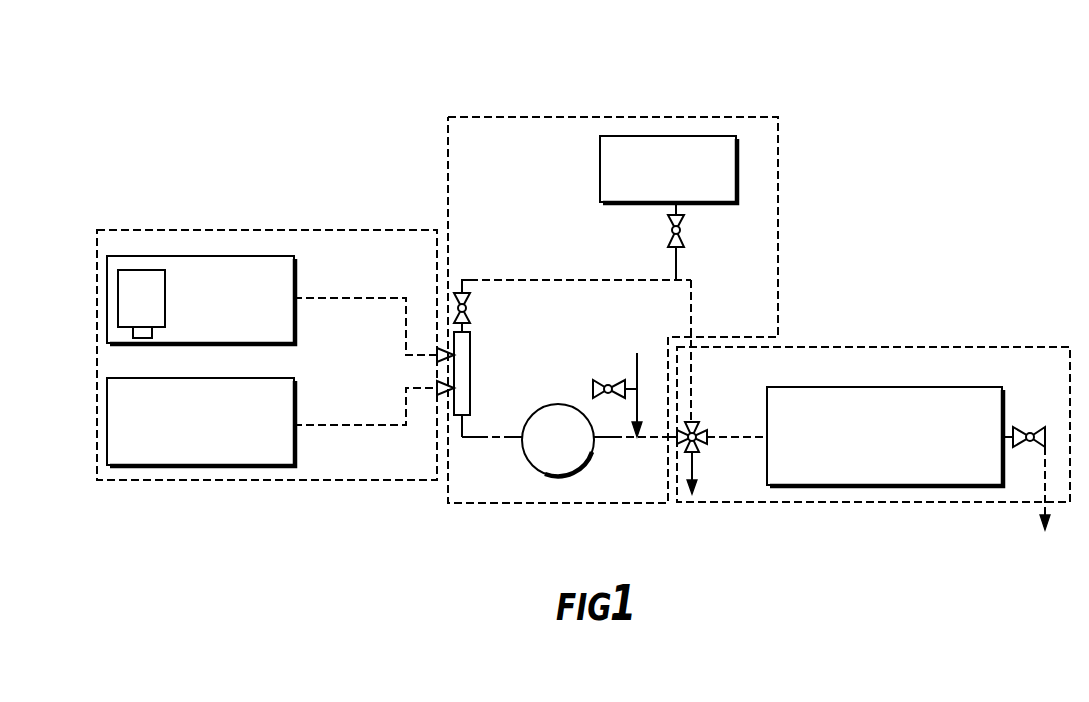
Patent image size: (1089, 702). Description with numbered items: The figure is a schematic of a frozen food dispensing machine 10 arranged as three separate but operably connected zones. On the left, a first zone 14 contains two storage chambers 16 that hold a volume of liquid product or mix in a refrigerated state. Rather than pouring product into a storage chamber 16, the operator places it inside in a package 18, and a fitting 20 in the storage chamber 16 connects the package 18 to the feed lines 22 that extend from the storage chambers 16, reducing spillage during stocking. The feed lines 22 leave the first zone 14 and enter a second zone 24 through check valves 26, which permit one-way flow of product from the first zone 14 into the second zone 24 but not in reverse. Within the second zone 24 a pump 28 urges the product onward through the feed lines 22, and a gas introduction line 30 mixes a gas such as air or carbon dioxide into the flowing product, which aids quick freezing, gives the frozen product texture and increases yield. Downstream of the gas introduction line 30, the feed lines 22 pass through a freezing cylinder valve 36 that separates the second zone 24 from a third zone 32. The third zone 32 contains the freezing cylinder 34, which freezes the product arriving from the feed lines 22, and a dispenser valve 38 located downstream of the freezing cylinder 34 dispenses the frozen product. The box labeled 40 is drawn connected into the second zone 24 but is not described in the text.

The frozen food dispensing machine 10 is at (374, 62).
The first zone 14 is at (250, 230).
The storage chamber 16 is at (188, 313).
The package 18 is at (128, 297).
The fitting 20 is at (140, 333).
The feed line 22 is at (351, 298).
The second zone 24 is at (497, 503).
The check valve 26 is at (454, 338).
The pump 28 is at (546, 453).
The gas introduction line 30 is at (637, 369).
The third zone 32 is at (868, 502).
The freezing cylinder 34 is at (871, 452).
The freezing cylinder valve 36 is at (700, 432).
The dispenser valve 38 is at (1028, 428).
The rinse fluid source 40 is at (656, 185).